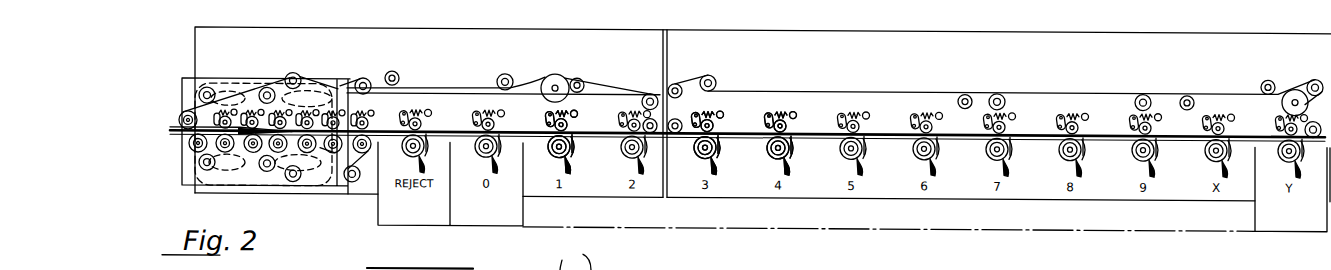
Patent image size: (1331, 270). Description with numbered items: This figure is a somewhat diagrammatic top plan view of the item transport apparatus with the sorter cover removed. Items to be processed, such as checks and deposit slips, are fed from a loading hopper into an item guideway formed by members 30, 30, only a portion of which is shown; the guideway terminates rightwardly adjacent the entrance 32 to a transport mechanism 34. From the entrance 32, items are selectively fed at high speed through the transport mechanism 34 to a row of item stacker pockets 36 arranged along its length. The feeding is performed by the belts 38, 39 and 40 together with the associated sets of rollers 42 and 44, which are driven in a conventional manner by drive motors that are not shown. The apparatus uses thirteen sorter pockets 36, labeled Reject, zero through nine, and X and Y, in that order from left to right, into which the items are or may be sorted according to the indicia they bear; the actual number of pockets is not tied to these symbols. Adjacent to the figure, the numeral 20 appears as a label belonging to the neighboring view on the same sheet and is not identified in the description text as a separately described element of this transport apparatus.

The document handling apparatus 20 is at (473, 267).
The item guideway members 30 is at (182, 113).
The entrance 32 is at (243, 143).
The transport mechanism 34 is at (690, 166).
The item stacker pockets 36 is at (463, 203).
The belt 38 is at (433, 87).
The belt 39 is at (327, 153).
The belt 40 is at (1035, 87).
The set of rollers 42 is at (582, 113).
The set of rollers 44 is at (797, 110).